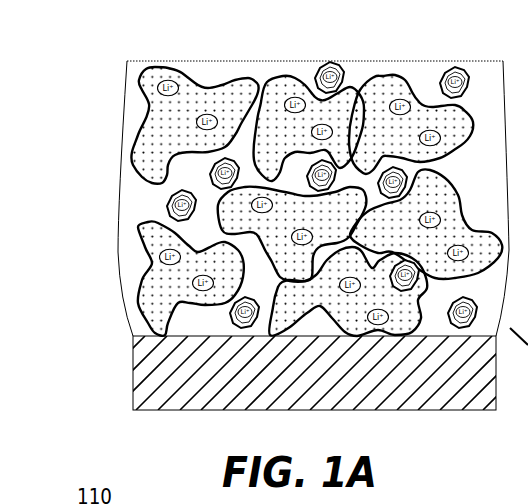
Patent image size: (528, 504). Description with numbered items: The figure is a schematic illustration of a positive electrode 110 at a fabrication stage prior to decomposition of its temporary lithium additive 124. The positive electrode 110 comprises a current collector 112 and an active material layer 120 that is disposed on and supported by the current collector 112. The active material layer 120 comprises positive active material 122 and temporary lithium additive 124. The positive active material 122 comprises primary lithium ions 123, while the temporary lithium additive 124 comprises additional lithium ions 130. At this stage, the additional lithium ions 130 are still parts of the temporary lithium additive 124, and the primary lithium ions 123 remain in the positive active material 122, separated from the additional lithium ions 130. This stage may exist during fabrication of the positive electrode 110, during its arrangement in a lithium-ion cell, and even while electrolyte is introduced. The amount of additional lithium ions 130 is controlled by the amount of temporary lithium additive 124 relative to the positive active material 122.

The positive electrode 110 is at (95, 70).
The current collector 112 is at (143, 388).
The active material layer 120 is at (133, 120).
The positive active material 122 is at (147, 157).
The primary lithium ions 123 is at (143, 88).
The temporary lithium additive 124 is at (170, 198).
The additional lithium ions 130 is at (160, 210).